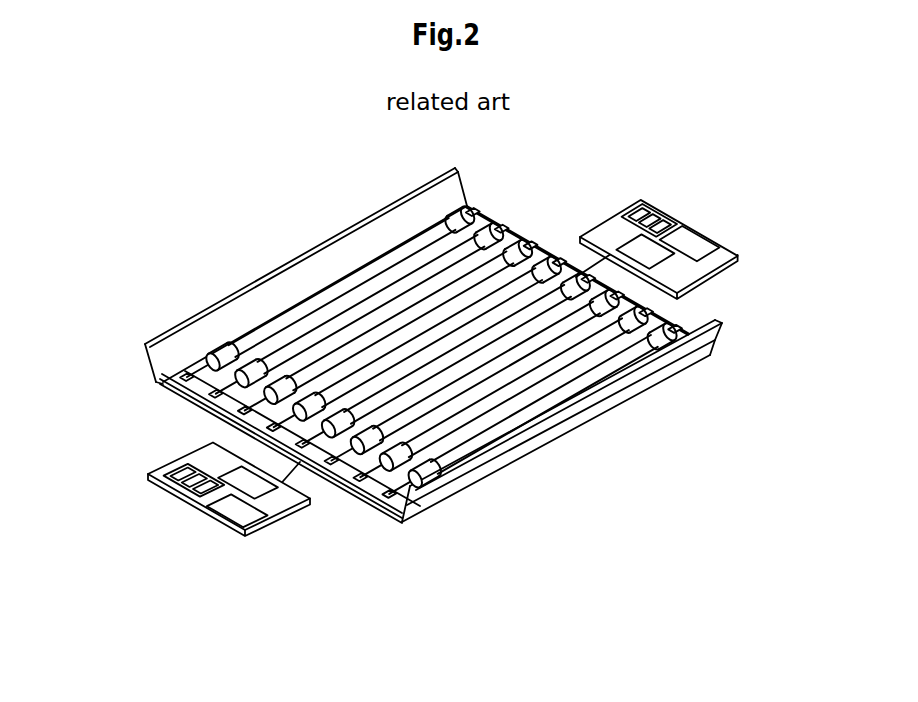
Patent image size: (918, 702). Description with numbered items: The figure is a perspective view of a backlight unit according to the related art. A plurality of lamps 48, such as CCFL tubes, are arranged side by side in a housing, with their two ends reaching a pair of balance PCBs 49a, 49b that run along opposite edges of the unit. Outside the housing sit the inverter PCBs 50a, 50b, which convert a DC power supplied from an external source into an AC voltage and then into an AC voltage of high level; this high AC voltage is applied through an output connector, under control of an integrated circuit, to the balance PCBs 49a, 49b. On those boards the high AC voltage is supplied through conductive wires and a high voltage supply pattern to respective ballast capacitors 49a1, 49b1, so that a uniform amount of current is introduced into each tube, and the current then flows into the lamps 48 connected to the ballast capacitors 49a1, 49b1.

The lamps 48 is at (540, 408).
The balance PCB 49a is at (264, 464).
The ballast capacitor 49a1 is at (378, 503).
The balance PCB 49b is at (633, 294).
The ballast capacitor 49b1 is at (676, 334).
The inverter PCB 50a is at (203, 502).
The inverter PCB 50b is at (686, 232).